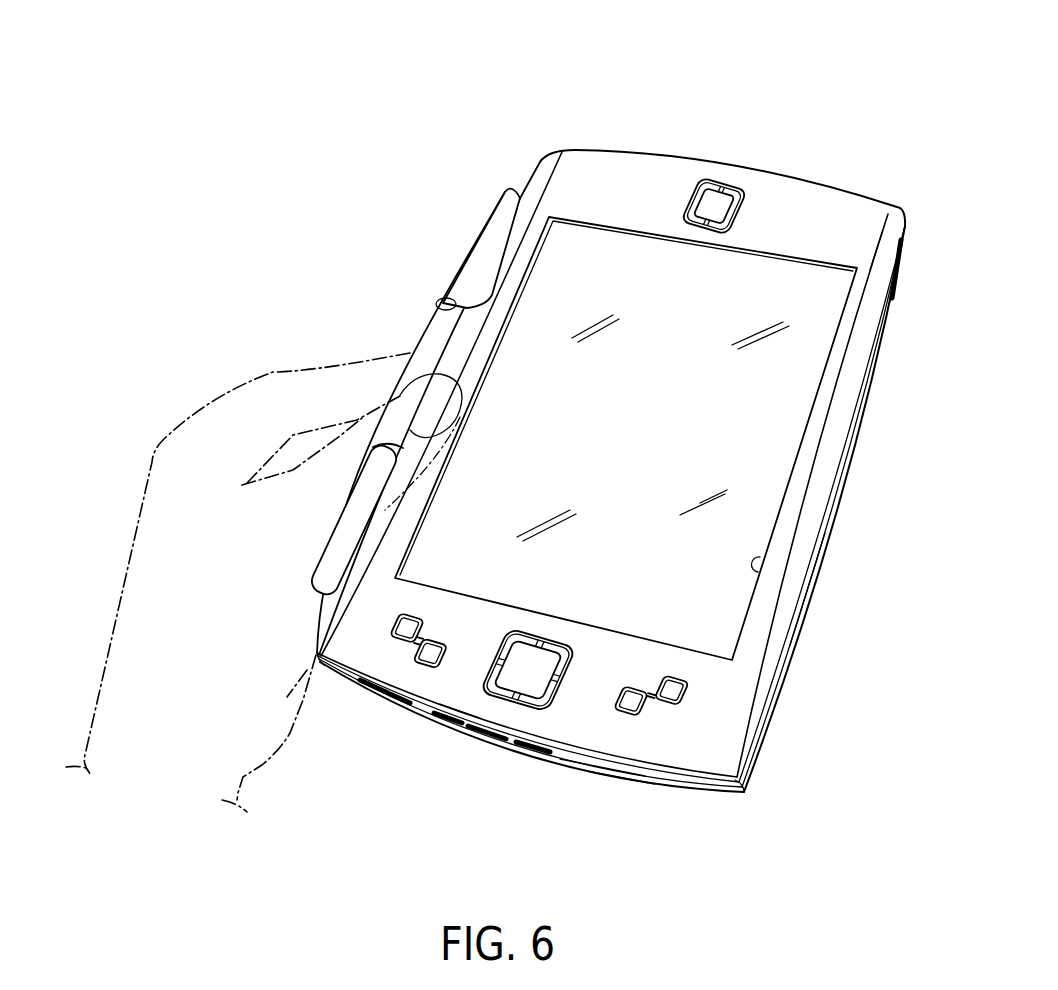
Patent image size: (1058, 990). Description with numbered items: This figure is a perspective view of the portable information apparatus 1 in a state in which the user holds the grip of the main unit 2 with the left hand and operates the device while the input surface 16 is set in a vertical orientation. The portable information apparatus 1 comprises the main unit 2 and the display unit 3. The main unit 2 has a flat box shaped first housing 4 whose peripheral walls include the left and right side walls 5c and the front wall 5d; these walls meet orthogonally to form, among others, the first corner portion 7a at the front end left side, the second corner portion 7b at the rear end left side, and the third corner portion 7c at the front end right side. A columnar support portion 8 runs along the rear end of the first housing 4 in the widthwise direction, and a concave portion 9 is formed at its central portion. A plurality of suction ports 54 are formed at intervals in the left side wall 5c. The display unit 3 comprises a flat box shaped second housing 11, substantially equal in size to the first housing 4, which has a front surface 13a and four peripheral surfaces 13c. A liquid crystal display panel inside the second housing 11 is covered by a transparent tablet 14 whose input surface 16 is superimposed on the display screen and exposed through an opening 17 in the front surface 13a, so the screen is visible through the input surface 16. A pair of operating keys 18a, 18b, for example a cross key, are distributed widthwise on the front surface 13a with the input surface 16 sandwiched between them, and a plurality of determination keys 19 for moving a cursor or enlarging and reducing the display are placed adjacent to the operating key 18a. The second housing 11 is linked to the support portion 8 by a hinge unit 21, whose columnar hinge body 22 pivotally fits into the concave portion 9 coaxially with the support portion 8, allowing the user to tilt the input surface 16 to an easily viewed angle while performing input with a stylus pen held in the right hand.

The portable information apparatus 1 is at (706, 103).
The main unit 2 is at (672, 800).
The display unit 3 is at (816, 178).
The first housing 4 is at (577, 768).
The side wall 5c is at (622, 782).
The front wall 5d is at (793, 645).
The first corner portion 7a is at (740, 795).
The second corner portion 7b is at (331, 670).
The third corner portion 7c is at (905, 250).
The support portion 8 is at (350, 517).
The concave portion 9 is at (440, 303).
The second housing 11 is at (590, 168).
The front surface 13a is at (852, 223).
The peripheral surface 13c is at (465, 728).
The tablet 14 is at (782, 405).
The input surface 16 is at (634, 425).
The opening 17 is at (770, 560).
The operating key 18a is at (540, 668).
The operating key 18b is at (718, 200).
The determination keys 19 is at (435, 648).
The hinge unit 21 is at (421, 336).
The hinge body 22 is at (400, 413).
The suction ports 54 is at (440, 726).